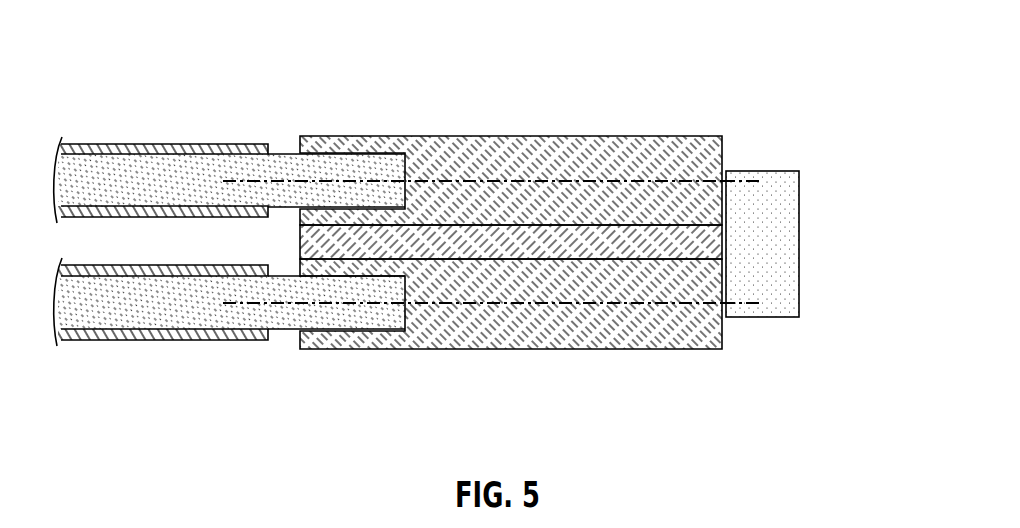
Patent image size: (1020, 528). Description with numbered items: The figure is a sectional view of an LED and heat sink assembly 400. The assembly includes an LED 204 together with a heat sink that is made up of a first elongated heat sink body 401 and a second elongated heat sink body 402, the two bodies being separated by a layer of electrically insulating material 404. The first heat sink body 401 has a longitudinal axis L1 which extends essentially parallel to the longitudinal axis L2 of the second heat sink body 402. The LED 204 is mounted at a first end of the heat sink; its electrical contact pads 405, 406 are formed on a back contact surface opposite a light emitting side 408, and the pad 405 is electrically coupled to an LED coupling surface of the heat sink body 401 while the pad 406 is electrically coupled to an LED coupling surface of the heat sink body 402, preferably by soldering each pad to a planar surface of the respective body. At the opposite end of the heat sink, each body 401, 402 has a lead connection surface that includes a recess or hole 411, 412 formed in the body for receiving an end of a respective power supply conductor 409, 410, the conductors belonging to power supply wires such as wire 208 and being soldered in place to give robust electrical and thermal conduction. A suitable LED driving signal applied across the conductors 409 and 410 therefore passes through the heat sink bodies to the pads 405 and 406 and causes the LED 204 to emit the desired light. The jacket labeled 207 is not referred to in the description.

The LED and heat sink assembly 400 is at (409, 43).
The first optical fiber jacket 207 is at (185, 143).
The power supply wire 208 is at (193, 340).
The conductor 409 is at (286, 163).
The conductor 410 is at (285, 320).
The recess or hole 411 is at (356, 154).
The recess or hole 412 is at (370, 331).
The first elongated heat sink body 401 is at (532, 153).
The second elongated heat sink body 402 is at (475, 330).
The layer of electrically insulating material 404 is at (557, 240).
The longitudinal axis L1 is at (621, 180).
The longitudinal axis L2 is at (663, 305).
The LED 204 is at (774, 155).
The electrical contact pad 405 is at (726, 204).
The electrical contact pad 406 is at (726, 289).
The light emitting side 408 is at (800, 233).